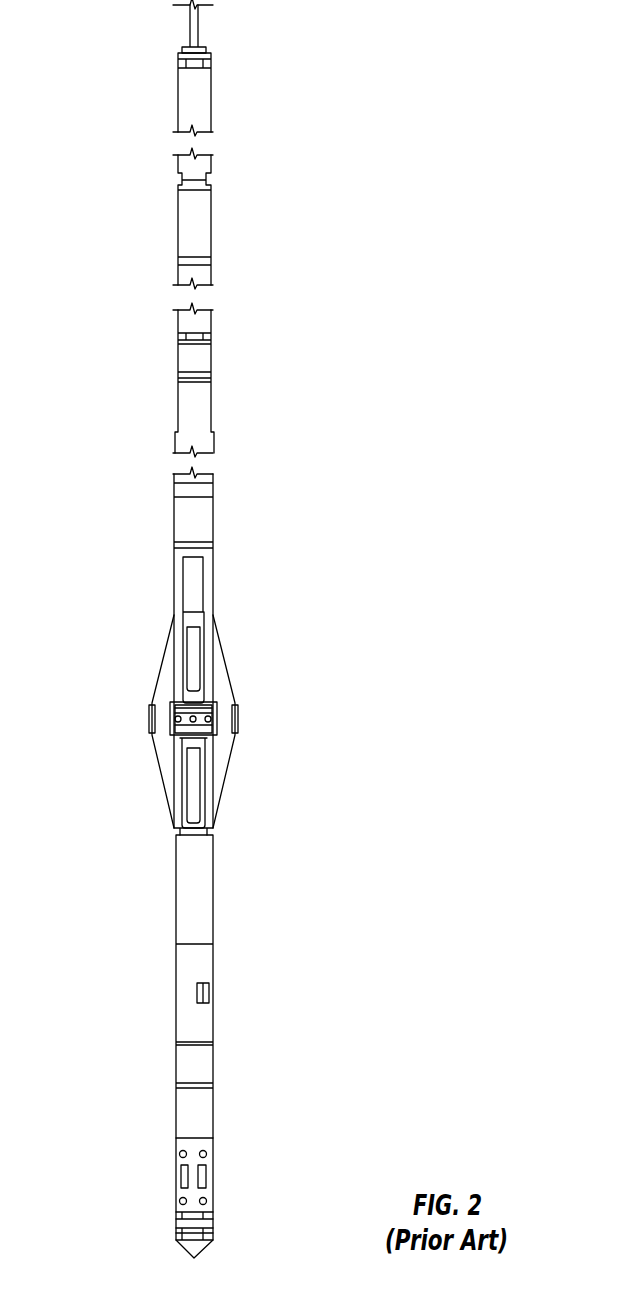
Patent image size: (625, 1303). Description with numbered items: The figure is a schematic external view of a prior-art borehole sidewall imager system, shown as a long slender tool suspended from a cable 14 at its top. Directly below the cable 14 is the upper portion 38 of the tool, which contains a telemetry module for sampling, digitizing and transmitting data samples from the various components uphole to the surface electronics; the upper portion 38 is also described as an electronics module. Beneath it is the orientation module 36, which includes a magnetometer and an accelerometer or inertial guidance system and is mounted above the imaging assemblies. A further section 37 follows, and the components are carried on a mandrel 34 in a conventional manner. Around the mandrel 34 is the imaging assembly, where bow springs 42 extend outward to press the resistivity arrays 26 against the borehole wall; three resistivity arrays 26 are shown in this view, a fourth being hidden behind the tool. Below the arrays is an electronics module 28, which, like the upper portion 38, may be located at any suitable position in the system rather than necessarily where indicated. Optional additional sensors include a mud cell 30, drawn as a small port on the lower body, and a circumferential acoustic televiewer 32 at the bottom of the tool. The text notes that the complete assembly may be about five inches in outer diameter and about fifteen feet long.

The wireline cable 14 is at (198, 35).
The upper portion 38 is at (211, 87).
The orientation module 36 is at (211, 235).
The power section 37 is at (211, 357).
The mandrel 34 is at (213, 522).
The bow springs 42 is at (163, 655).
The resistivity arrays 26 is at (149, 710).
The electronics module 28 is at (213, 890).
The mud cell 30 is at (212, 993).
The circumferential acoustic televiewer 32 is at (213, 1175).